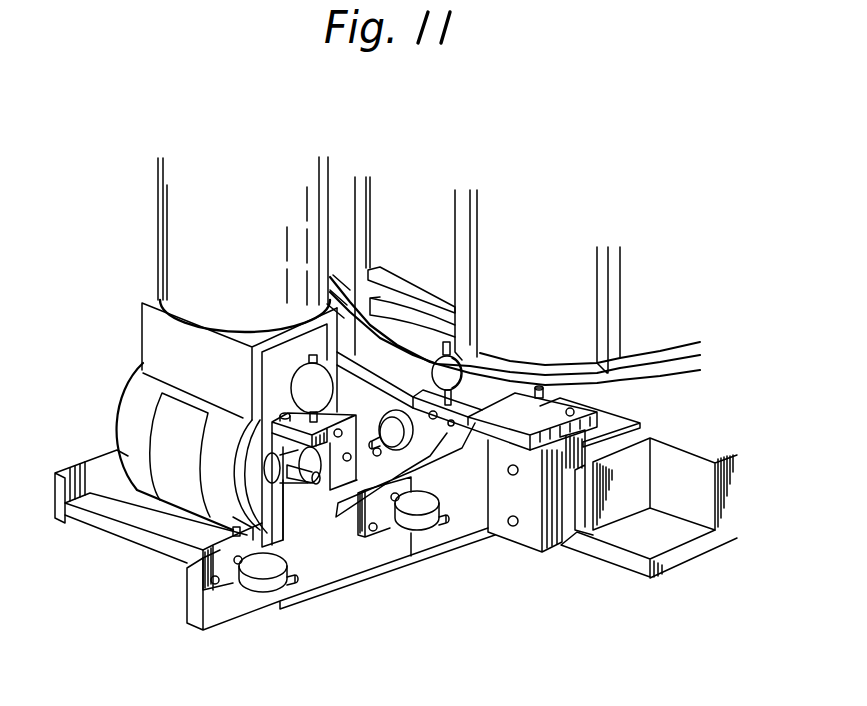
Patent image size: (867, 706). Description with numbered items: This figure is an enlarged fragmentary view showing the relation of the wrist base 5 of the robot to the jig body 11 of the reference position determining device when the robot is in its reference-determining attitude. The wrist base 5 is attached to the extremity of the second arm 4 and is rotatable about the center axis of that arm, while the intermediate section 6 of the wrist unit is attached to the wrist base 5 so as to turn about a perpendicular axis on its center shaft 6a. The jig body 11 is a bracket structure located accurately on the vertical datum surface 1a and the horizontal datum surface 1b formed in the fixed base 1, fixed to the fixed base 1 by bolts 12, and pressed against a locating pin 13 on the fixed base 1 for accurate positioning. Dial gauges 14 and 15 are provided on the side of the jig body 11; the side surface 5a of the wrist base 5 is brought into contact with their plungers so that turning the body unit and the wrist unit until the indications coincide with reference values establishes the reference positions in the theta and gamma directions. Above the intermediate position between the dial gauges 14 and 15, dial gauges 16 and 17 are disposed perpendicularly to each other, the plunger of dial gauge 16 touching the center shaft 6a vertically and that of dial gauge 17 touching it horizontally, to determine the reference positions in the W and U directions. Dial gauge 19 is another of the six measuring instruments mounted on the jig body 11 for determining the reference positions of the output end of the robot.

The fixed base 1 is at (723, 540).
The vertical datum surface 1a is at (580, 547).
The horizontal datum surface 1b is at (637, 418).
The second arm 4 is at (158, 185).
The wrist base 5 is at (143, 333).
The side surface of the wrist base 5a is at (217, 517).
The intermediate section of the wrist unit 6 is at (188, 413).
The center shaft 6a is at (303, 487).
The jig body 11 is at (347, 557).
The bolts 12 is at (597, 404).
The locating pin 13 is at (539, 386).
The dial gauge 14 is at (265, 579).
The dial gauge 15 is at (433, 500).
The dial gauge 16 is at (307, 387).
The dial gauge 17 is at (432, 452).
The dial gauge 19 is at (466, 362).